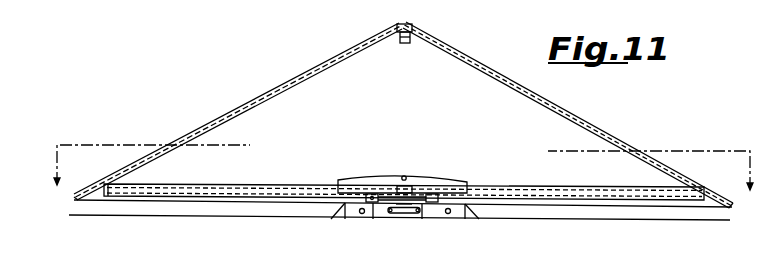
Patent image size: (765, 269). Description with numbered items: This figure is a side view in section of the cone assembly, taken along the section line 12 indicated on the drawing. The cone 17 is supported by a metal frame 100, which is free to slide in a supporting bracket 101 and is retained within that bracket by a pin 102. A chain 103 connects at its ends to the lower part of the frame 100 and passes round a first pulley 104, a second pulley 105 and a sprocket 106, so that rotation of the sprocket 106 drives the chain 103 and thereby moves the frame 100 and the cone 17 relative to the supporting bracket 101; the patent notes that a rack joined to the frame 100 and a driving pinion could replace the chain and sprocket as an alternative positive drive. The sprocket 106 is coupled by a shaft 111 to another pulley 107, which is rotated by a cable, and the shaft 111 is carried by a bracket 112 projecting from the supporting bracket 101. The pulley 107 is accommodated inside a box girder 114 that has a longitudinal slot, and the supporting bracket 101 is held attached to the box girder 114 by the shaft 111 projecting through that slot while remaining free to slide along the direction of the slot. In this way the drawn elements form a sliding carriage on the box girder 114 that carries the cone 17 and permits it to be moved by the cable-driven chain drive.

The section line 12- 12 is at (406, 179).
The cone 17 is at (403, 110).
The metal frame 100 is at (597, 138).
The supporting bracket 101 is at (406, 158).
The pin 102 is at (402, 177).
The chain 103 is at (182, 195).
The pulley 104 is at (372, 193).
The pulley 105 is at (443, 198).
The sprocket 106 is at (432, 203).
The pulley 107 is at (423, 230).
The shaft 111 is at (412, 206).
The bracket 112 is at (411, 190).
The box girder 114 is at (424, 221).